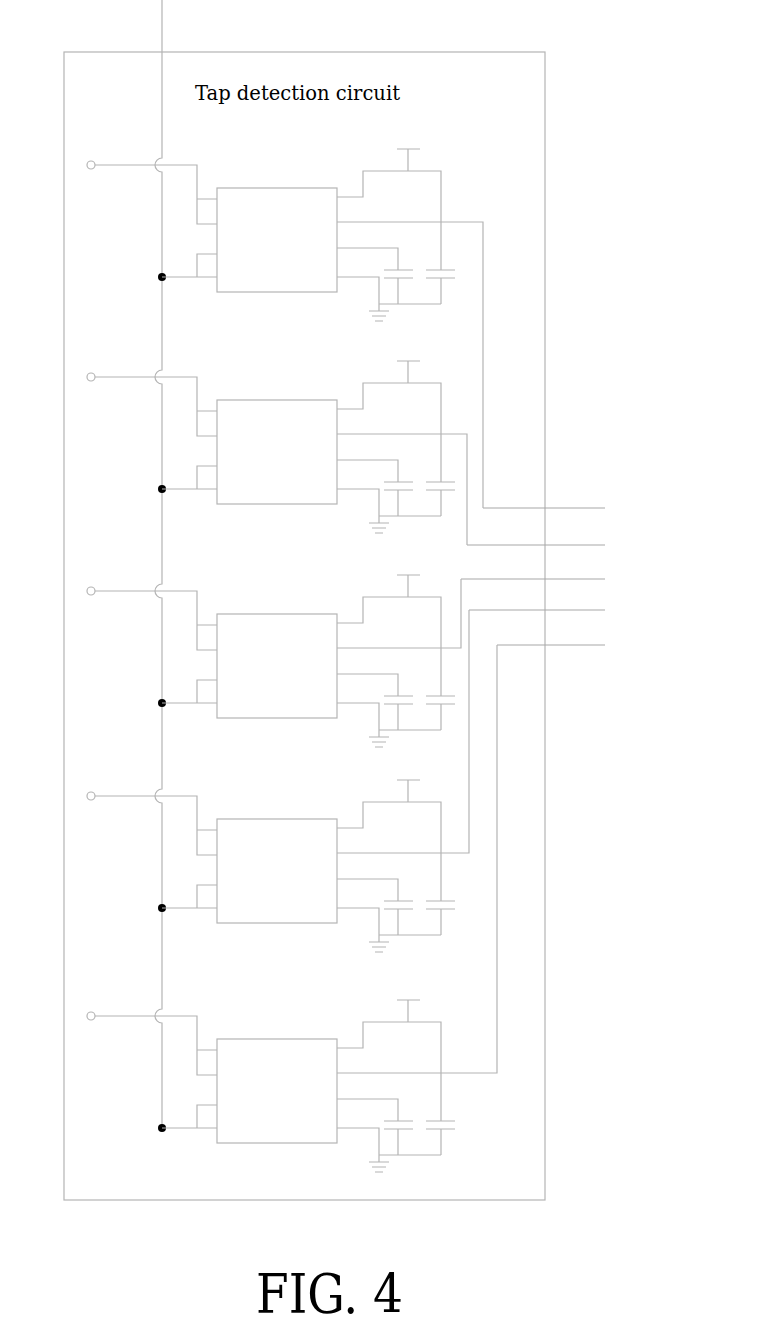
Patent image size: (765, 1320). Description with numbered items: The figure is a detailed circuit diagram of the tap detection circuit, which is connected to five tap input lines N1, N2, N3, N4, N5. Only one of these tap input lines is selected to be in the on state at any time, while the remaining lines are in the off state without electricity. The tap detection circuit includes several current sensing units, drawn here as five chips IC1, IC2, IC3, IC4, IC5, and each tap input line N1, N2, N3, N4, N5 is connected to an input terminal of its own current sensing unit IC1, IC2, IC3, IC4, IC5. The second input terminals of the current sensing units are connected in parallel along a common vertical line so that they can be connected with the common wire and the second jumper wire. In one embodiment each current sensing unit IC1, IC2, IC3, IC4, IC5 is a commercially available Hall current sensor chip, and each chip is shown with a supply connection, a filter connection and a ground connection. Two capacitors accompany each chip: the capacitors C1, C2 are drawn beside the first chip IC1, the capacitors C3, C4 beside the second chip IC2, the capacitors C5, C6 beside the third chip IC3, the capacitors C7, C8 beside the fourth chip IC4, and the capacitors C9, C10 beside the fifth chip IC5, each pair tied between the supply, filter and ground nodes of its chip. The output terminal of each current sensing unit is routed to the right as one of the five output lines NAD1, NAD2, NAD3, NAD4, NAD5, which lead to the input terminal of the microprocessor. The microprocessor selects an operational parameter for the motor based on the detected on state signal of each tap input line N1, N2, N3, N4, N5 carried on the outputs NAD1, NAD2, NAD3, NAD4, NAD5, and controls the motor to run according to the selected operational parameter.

The current sensor IC IC1 is at (350, 318).
The current sensor IC IC2 is at (342, 446).
The current sensor IC IC3 is at (339, 660).
The current sensor IC IC4 is at (343, 790).
The current sensor IC IC5 is at (357, 918).
The filter capacitor C1 is at (403, 274).
The bypass capacitor C2 is at (444, 272).
The filter capacitor C3 is at (403, 486).
The bypass capacitor C4 is at (444, 484).
The filter capacitor C5 is at (403, 700).
The bypass capacitor C6 is at (444, 698).
The filter capacitor C7 is at (403, 905).
The bypass capacitor C8 is at (444, 903).
The filter capacitor C9 is at (403, 1125).
The bypass capacitor C10 is at (447, 1123).
The tap input line N1 is at (152, 192).
The tap input line N2 is at (150, 404).
The tap input line N3 is at (150, 618).
The tap input line N4 is at (150, 823).
The tap input line N5 is at (148, 1043).
The detection output signal NAD1 is at (544, 494).
The detection output signal NAD2 is at (536, 531).
The detection output signal NAD3 is at (533, 565).
The detection output signal NAD4 is at (537, 597).
The detection output signal NAD5 is at (551, 631).